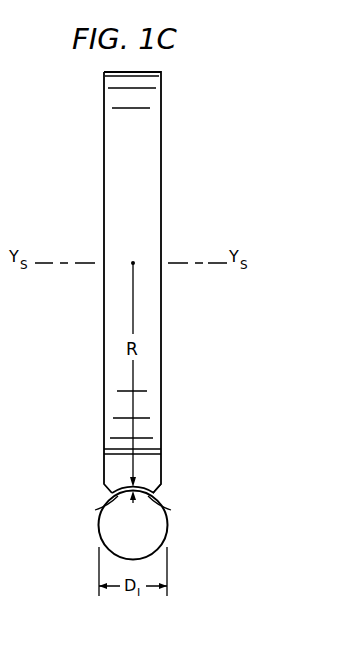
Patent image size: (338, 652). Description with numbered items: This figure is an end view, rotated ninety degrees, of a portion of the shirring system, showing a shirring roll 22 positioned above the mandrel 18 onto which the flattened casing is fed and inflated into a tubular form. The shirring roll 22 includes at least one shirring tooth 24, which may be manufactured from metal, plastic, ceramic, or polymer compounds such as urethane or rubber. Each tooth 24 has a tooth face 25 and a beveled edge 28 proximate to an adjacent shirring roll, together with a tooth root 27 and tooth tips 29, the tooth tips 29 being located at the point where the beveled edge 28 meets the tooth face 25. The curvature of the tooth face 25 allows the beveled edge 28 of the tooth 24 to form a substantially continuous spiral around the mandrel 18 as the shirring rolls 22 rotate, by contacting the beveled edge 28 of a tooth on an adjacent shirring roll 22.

The mandrel 18 is at (167, 530).
The shirring roll 22 is at (104, 148).
The shirring tooth 24 is at (106, 467).
The tooth face 25 is at (95, 510).
The tooth root 27 is at (171, 510).
The beveled edge 28 is at (158, 491).
The tooth tips 29 is at (110, 493).